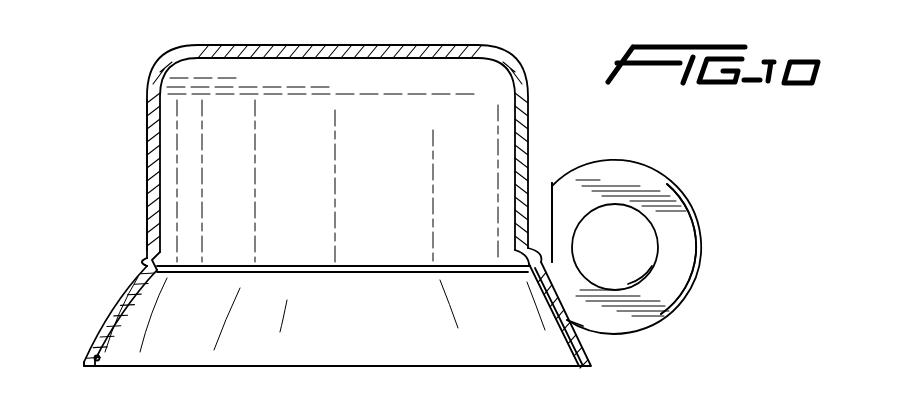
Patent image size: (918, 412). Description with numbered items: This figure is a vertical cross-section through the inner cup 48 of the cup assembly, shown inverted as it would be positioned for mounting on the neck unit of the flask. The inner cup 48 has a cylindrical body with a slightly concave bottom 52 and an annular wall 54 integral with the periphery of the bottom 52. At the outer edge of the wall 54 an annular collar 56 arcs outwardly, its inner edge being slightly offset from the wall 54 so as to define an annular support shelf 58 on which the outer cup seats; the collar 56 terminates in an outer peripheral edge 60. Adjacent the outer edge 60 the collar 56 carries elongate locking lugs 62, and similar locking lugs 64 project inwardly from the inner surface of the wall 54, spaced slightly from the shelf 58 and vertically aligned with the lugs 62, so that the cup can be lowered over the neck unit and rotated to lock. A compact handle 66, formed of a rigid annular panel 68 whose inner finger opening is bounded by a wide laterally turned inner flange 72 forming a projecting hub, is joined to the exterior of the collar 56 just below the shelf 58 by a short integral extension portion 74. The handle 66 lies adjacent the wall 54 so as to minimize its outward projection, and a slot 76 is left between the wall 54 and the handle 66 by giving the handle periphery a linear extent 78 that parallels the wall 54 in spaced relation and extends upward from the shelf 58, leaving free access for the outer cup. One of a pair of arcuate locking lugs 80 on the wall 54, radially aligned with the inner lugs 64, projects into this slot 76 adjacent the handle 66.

The inner cup 48 is at (143, 90).
The bottom 52 is at (345, 50).
The annular wall 54 is at (153, 172).
The annular collar 56 is at (109, 293).
The support shelf 58 is at (140, 257).
The outer peripheral edge 60 is at (88, 367).
The locking lugs 62 is at (103, 358).
The locking lugs 64 is at (162, 253).
The handle 66 is at (670, 178).
The annular panel 68 is at (690, 243).
The inner flange 72 is at (638, 280).
The extension portion 74 is at (585, 322).
The slot 76 is at (540, 194).
The linear extent 78 is at (544, 233).
The arcuate locking lugs 80 is at (143, 250).